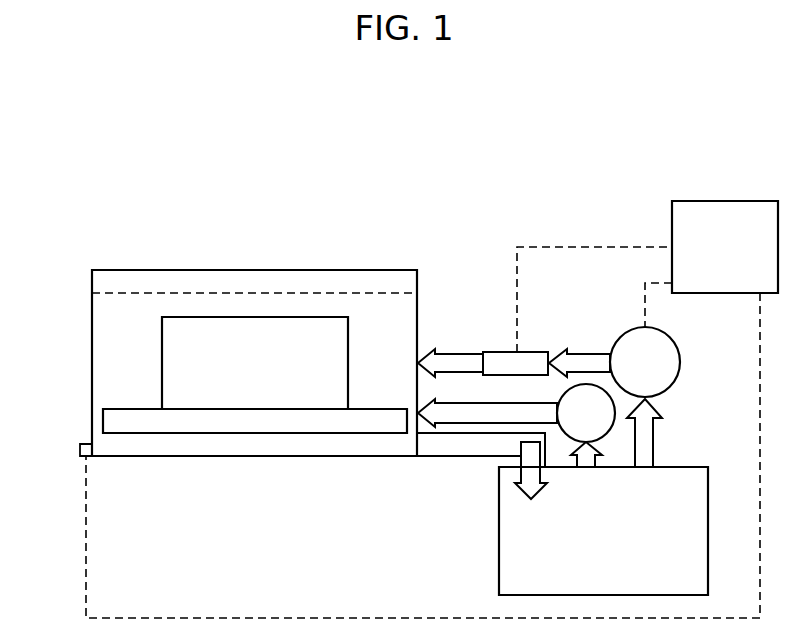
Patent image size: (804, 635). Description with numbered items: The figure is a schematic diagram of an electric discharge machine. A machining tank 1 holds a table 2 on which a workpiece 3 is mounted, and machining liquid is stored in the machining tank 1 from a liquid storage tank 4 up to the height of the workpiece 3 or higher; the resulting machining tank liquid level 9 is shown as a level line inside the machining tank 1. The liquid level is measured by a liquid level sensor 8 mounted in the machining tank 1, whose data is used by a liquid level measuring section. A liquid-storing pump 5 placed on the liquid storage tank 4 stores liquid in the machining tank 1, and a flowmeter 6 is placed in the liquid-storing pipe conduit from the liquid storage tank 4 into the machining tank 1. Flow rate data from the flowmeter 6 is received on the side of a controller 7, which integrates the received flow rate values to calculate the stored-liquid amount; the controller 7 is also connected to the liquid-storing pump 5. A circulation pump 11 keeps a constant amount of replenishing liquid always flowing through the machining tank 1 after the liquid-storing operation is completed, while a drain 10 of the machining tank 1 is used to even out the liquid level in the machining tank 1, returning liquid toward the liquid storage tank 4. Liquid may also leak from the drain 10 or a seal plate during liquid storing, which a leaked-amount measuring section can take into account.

The machining tank 1 is at (92, 285).
The table 2 is at (103, 421).
The workpiece 3 is at (162, 362).
The liquid storage tank 4 is at (499, 562).
The liquid-storing pump 5 is at (620, 336).
The flowmeter 6 is at (510, 352).
The controller 7 is at (723, 201).
The liquid level sensor 8 is at (80, 450).
The machining tank liquid level 9 is at (227, 293).
The drain 10 is at (473, 457).
The circulation pump 11 is at (614, 425).